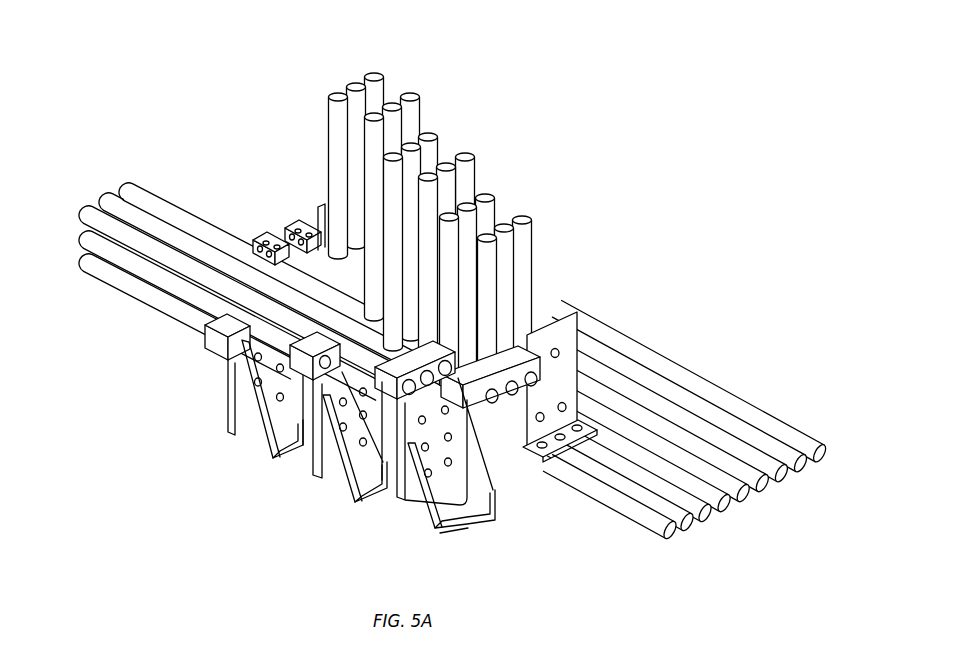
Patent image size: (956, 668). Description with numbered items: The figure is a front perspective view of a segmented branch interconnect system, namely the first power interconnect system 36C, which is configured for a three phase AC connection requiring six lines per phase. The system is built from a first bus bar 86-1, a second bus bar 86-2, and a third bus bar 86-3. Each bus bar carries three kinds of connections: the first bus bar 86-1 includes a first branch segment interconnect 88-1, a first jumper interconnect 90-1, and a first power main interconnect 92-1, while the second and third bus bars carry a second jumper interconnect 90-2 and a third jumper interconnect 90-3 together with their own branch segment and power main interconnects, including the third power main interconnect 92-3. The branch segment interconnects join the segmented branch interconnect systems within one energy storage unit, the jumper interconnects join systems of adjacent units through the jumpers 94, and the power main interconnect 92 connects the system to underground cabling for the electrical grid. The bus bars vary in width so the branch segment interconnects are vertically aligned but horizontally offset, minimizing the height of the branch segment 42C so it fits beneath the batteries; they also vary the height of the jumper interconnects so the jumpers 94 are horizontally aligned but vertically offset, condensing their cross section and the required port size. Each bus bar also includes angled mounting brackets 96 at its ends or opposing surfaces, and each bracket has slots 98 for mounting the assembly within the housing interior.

The first power interconnect system 36C is at (322, 58).
The branch segment 42C is at (738, 424).
The jumpers 94 is at (128, 297).
The first branch segment interconnect 88-1 is at (572, 392).
The power main interconnect 92 is at (414, 334).
The first power main interconnect 92-1 is at (484, 404).
The third power main interconnect 92-3 is at (287, 232).
The first jumper interconnect 90-1 is at (388, 505).
The second jumper interconnect 90-2 is at (290, 452).
The third jumper interconnect 90-3 is at (210, 340).
The first bus bar 86-1 is at (407, 500).
The second bus bar 86-2 is at (312, 457).
The third bus bar 86-3 is at (227, 413).
The angled mounting bracket 96 is at (250, 433).
The slots 98 is at (460, 548).